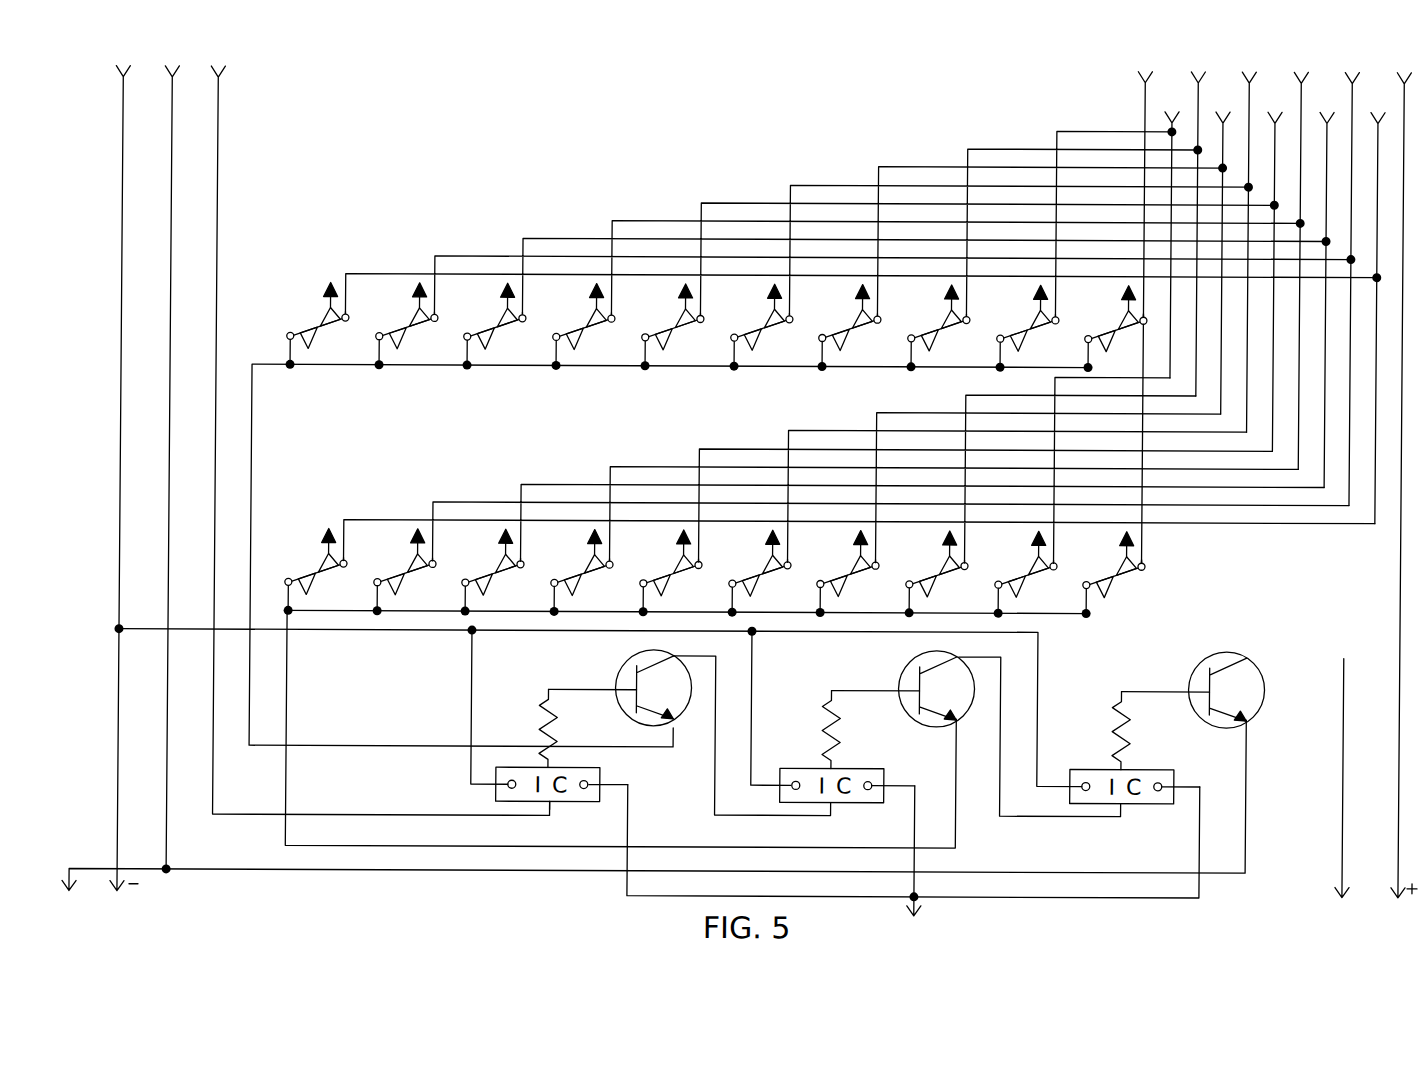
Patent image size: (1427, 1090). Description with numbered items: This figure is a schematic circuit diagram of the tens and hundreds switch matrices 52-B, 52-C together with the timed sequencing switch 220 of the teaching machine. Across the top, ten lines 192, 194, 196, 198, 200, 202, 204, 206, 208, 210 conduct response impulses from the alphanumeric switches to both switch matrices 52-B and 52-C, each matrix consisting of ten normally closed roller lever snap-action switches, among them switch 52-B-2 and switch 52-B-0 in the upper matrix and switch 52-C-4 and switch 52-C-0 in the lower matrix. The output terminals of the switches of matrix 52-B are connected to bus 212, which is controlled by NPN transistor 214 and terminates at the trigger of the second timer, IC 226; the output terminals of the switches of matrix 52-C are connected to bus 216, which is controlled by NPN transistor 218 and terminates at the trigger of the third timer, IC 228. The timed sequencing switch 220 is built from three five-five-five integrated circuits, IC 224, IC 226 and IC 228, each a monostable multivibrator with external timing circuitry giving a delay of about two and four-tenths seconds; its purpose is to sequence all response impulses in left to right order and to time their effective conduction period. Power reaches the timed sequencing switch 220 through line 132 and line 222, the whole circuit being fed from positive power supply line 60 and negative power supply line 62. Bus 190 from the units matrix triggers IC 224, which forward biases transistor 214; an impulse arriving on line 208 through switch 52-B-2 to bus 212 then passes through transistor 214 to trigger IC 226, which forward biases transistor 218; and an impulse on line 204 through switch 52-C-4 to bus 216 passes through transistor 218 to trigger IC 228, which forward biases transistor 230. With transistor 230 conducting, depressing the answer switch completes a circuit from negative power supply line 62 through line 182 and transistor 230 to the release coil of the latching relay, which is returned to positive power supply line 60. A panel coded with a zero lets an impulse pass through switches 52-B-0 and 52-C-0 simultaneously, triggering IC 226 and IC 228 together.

The positive power supply line 60 is at (1401, 485).
The negative power supply line 62 is at (122, 478).
The line 132 is at (913, 867).
The line 182 is at (1278, 795).
The bus 190 is at (368, 816).
The line 192 is at (1147, 304).
The line 194 is at (1171, 230).
The line 196 is at (1197, 220).
The line 198 is at (1223, 248).
The line 200 is at (1250, 238).
The line 202 is at (1274, 267).
The line 204 is at (1301, 256).
The line 206 is at (1326, 285).
The line 208 is at (1352, 275).
The line 210 is at (1377, 304).
The bus 212 is at (673, 367).
The NPN transistor 214 is at (618, 673).
The bus 216 is at (288, 716).
The NPN transistor 218 is at (906, 669).
The timed sequencing switch 220 is at (586, 820).
The line 222 is at (298, 632).
The IC 224 is at (498, 792).
The IC 226 is at (886, 796).
The IC 228 is at (1174, 796).
The transistor 230 is at (1196, 669).
The switch matrix 52-B is at (537, 397).
The snap-action switch 52-B-0 is at (1118, 345).
The snap-action switch 52-B-2 is at (428, 335).
The switch matrix 52-C is at (440, 620).
The snap-action switch 52-C-0 is at (1122, 582).
The snap-action switch 52-C-4 is at (595, 612).